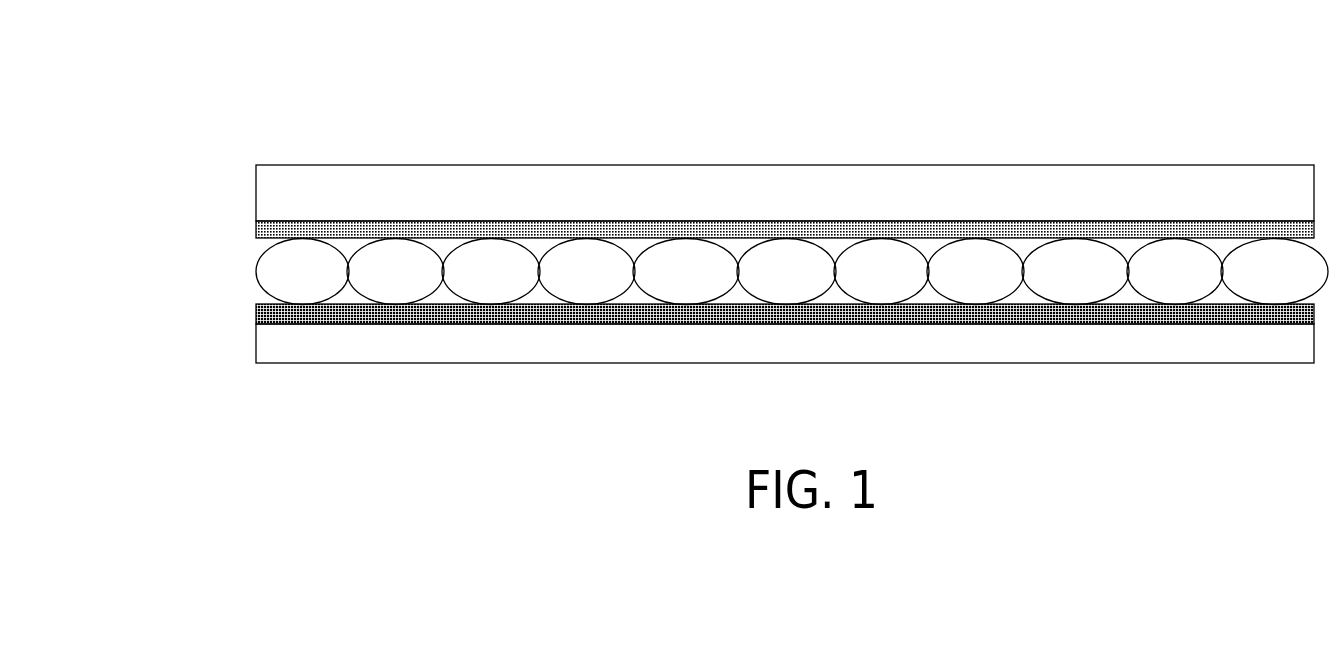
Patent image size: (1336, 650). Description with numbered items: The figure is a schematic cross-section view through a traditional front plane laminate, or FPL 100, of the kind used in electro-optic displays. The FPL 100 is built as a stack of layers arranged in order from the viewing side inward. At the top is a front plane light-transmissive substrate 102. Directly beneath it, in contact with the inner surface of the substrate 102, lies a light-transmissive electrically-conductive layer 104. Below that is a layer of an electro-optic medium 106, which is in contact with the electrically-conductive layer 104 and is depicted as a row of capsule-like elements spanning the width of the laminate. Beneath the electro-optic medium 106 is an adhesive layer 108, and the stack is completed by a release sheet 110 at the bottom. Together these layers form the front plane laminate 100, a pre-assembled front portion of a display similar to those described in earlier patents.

The front plane laminate 100 is at (462, 78).
The front plane light-transmissive substrate 102 is at (768, 207).
The light-transmissive electrically-conductive layer 104 is at (257, 230).
The layer of electro-optic medium 106 is at (275, 277).
The adhesive layer 108 is at (255, 313).
The release sheet 110 is at (770, 359).